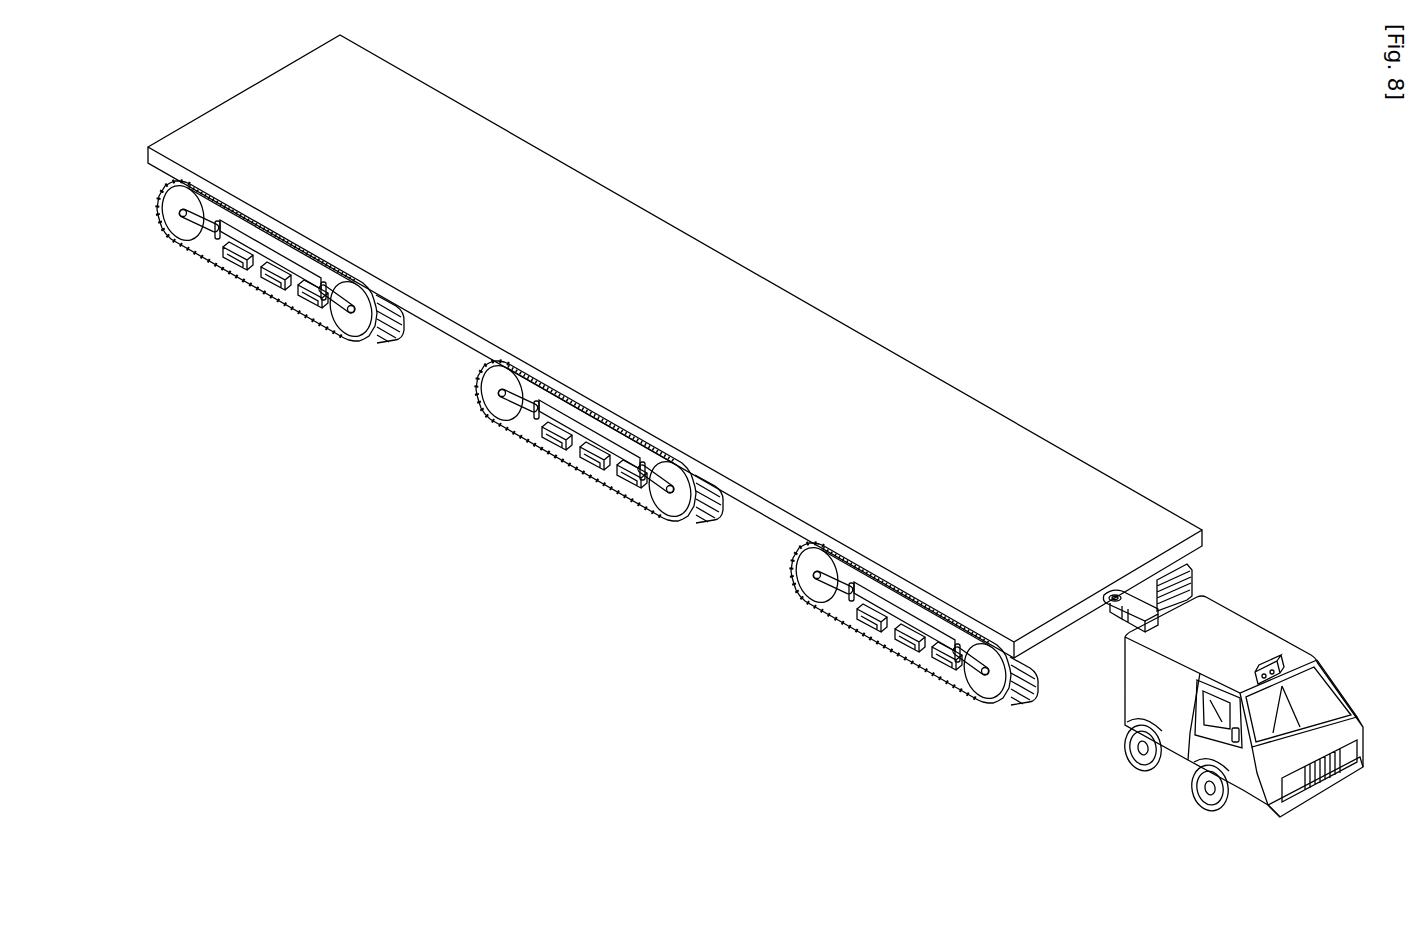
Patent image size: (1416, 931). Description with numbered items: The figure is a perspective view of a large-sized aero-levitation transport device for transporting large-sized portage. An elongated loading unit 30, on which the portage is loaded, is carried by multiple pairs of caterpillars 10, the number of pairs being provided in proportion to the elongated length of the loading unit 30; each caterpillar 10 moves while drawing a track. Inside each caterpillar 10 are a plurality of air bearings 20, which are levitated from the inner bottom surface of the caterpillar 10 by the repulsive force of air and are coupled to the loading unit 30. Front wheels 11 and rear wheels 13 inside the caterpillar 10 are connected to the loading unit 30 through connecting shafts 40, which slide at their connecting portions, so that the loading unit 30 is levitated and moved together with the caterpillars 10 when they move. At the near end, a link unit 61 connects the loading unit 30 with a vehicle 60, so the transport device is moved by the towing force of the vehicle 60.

The caterpillar 10 is at (691, 452).
The front wheel 11 is at (267, 278).
The rear wheel 13 is at (249, 261).
The air bearing 20 is at (268, 280).
The loading unit 30 is at (1033, 452).
The connecting shaft 40 is at (253, 282).
The vehicle 60 is at (1312, 637).
The link unit 61 is at (1127, 593).